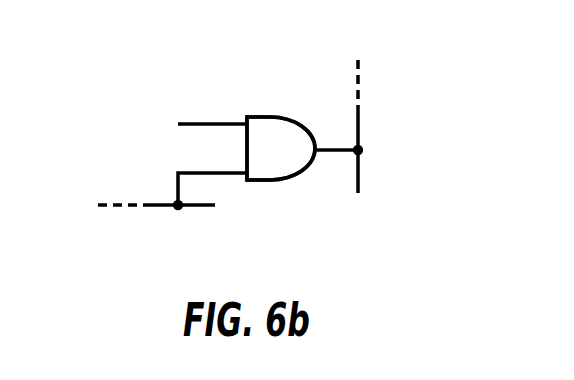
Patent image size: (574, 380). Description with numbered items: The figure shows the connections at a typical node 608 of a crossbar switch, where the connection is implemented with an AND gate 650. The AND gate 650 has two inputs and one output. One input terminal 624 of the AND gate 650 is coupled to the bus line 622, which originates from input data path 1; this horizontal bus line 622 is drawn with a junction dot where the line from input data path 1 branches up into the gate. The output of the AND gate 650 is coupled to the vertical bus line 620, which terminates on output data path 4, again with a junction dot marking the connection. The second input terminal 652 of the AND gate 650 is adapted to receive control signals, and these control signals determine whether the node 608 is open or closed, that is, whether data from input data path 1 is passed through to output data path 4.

The node 608 is at (303, 260).
The AND gate 650 is at (297, 117).
The second input terminal 652 is at (203, 123).
The input terminal 624 is at (218, 173).
The bus line 622 is at (198, 208).
The bus line 620 is at (361, 130).
The input data path 1 is at (113, 206).
The output data path 4 is at (352, 70).